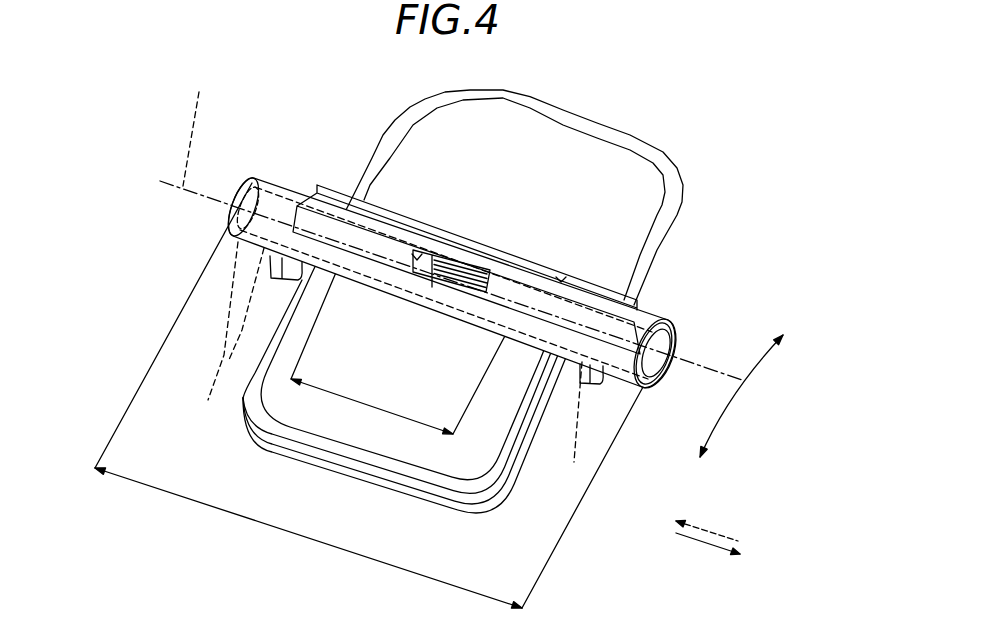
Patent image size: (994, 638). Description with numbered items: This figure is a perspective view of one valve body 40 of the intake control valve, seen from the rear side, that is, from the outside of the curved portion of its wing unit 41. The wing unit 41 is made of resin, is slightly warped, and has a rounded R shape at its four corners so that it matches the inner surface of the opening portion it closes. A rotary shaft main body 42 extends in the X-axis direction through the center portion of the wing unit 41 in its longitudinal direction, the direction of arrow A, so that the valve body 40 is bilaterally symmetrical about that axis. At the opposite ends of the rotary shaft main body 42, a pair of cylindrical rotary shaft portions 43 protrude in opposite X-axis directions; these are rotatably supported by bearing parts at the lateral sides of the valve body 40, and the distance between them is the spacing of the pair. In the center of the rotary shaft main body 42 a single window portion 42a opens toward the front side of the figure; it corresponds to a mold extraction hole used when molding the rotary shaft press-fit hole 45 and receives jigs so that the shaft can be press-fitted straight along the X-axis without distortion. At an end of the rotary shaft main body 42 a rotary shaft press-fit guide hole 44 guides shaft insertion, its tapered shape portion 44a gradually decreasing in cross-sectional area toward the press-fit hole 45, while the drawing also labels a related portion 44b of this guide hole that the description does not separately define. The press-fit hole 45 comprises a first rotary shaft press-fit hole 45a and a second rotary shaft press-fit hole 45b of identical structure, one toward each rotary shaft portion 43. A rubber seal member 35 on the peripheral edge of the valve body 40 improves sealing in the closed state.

The seal member 35 is at (630, 136).
The valve body 40 is at (727, 97).
The wing unit 41 is at (527, 122).
The rotary shaft main body 42 is at (466, 245).
The window portion 42a is at (488, 268).
The rotary shaft portion 43 is at (272, 188).
The rotary shaft press-fit guide hole 44 is at (500, 351).
The tapered shape portion 44a is at (398, 364).
The arm leg 44b is at (788, 243).
The rotary shaft press-fit hole 45 is at (527, 212).
The first rotary shaft press-fit hole 45a is at (417, 250).
The second rotary shaft press-fit hole 45b is at (560, 277).